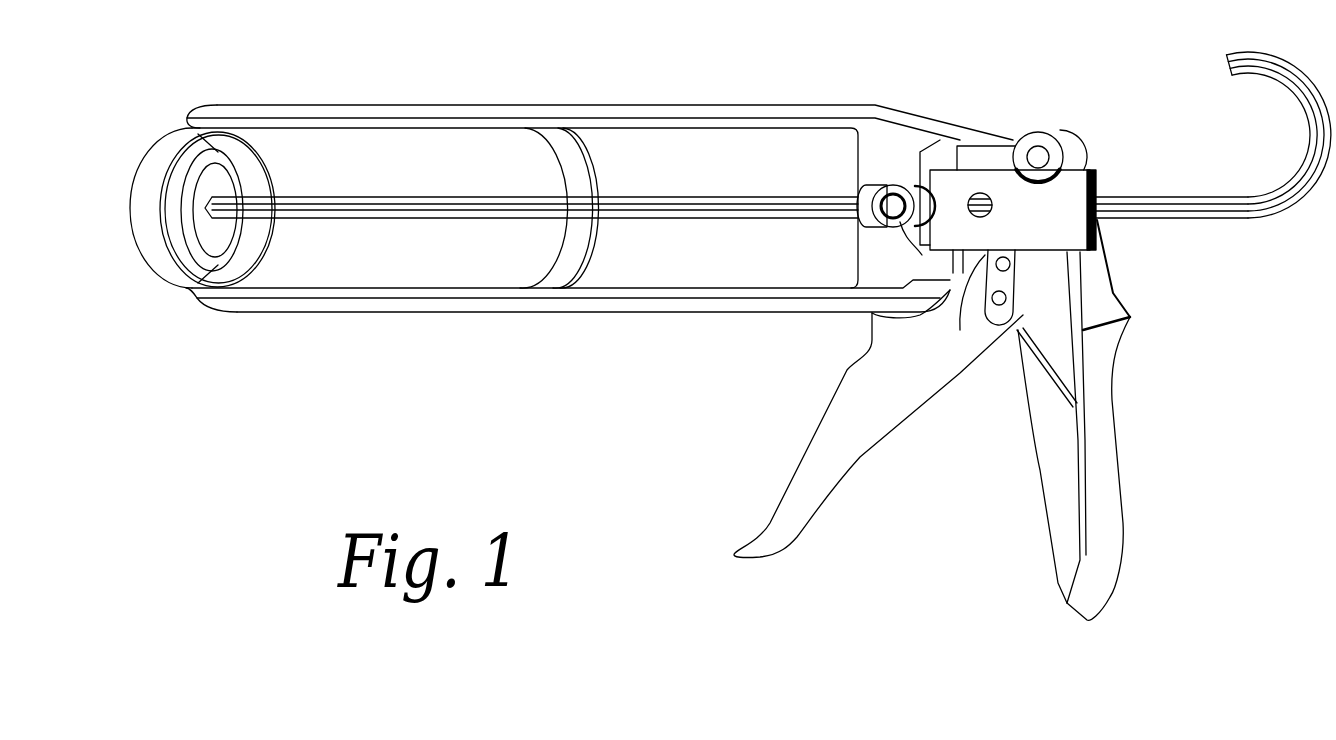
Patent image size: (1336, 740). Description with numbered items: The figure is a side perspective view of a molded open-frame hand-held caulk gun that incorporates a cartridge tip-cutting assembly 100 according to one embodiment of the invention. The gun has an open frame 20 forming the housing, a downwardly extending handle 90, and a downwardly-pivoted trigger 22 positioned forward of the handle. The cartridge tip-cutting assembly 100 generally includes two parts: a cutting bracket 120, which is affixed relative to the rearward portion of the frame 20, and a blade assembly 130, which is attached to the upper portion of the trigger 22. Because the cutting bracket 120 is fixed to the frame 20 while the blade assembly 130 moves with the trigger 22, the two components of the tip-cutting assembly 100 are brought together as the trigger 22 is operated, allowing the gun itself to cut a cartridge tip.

The frame 20 is at (865, 103).
The trigger 22 is at (770, 508).
The handle 90 is at (1107, 608).
The cartridge tip-cutting assembly 100 is at (1010, 318).
The cutting bracket 120 is at (1062, 226).
The blade assembly 130 is at (960, 330).